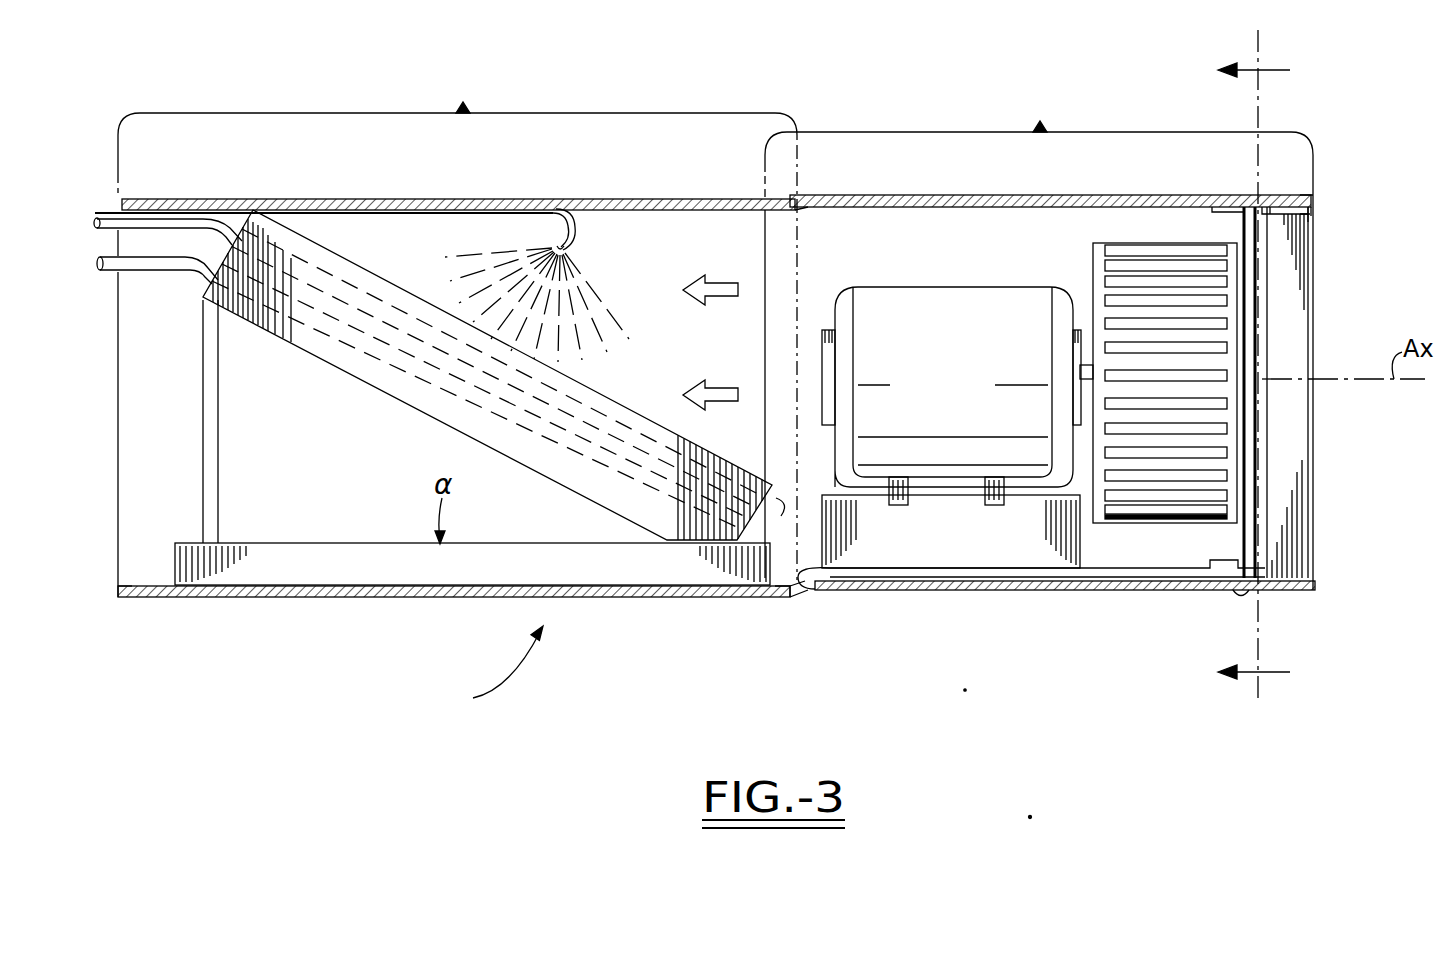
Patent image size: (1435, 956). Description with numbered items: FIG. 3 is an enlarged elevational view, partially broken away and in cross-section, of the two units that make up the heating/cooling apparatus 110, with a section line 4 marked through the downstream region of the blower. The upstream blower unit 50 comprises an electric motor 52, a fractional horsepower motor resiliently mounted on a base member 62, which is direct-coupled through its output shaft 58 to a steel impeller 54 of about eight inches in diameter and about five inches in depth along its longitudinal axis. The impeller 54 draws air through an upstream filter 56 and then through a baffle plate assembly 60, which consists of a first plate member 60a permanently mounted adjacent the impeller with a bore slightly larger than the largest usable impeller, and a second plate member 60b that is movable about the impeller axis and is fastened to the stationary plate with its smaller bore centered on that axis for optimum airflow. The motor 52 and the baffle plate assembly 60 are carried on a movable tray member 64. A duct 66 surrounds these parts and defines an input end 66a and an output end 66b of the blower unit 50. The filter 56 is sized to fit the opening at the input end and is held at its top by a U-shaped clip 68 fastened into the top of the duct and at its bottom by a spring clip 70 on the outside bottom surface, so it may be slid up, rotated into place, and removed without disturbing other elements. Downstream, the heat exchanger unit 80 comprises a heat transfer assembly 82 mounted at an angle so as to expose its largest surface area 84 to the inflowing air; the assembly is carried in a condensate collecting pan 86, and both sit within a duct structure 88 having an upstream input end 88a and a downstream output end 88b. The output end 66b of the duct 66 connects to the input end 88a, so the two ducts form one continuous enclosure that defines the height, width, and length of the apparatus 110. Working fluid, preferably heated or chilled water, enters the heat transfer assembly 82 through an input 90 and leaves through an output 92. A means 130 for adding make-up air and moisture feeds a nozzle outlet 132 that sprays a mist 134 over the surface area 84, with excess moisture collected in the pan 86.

The section line 4- 4 is at (1270, 365).
The blower unit 50 is at (1039, 339).
The electric motor 52 is at (975, 410).
The impeller 54 is at (1162, 525).
The filter 56 is at (1302, 497).
The output shaft 58 is at (1080, 368).
The baffle plate assembly 60 is at (1264, 462).
The first plate member 60a is at (1242, 228).
The second plate member 60b is at (1258, 268).
The base member 62 is at (970, 560).
The movable tray member 64 is at (1060, 577).
The duct 66 is at (997, 195).
The input end 66a is at (1314, 203).
The output end 66b is at (801, 589).
The U-shaped clip 68 is at (1318, 208).
The spring clip 70 is at (1297, 590).
The heat exchanger unit 80 is at (457, 335).
The heat transfer assembly 82 is at (505, 410).
The surface area 84 is at (536, 342).
The condensate collecting pan 86 is at (362, 543).
The duct structure 88 is at (456, 199).
The upstream input end 88a is at (788, 594).
The downstream output end 88b is at (122, 597).
The input 90 is at (95, 228).
The output 92 is at (98, 266).
The heating/cooling apparatus 110 is at (484, 670).
The means for adding make-up air and moisture 130 is at (580, 222).
The nozzle outlet 132 is at (563, 242).
The mist 134 is at (636, 348).